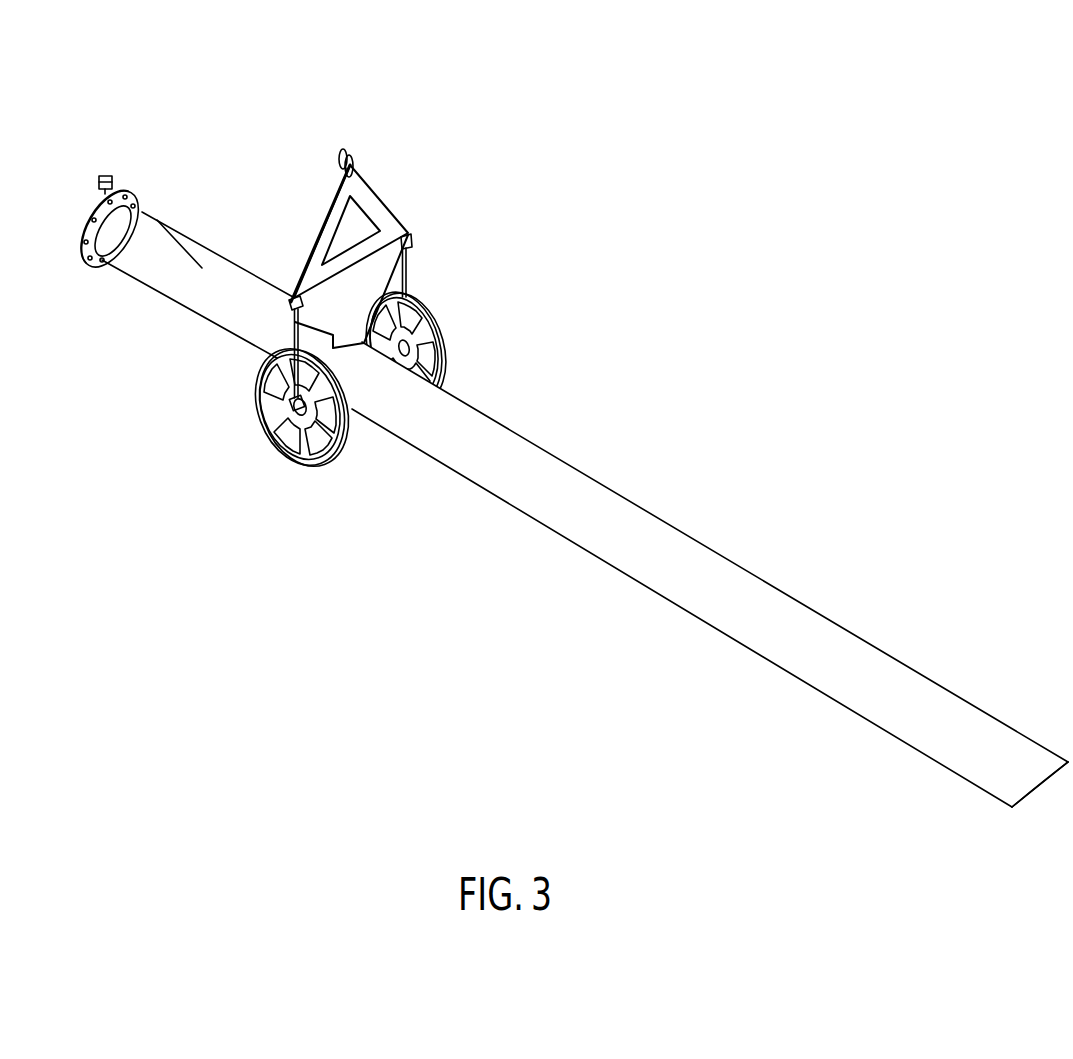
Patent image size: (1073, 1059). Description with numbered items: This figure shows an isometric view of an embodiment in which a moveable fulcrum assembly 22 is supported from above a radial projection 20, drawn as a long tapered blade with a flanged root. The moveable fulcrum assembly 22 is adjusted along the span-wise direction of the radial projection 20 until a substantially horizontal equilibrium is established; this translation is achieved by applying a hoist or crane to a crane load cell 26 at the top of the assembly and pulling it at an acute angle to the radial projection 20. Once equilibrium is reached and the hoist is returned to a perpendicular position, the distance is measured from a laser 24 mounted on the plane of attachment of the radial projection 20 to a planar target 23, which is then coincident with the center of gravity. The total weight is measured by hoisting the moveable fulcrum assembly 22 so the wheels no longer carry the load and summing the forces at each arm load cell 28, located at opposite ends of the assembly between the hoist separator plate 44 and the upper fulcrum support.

The radial projection 20 is at (832, 648).
The moveable fulcrum assembly 22 is at (458, 346).
The planar target 23 is at (342, 298).
The laser 24 is at (110, 170).
The crane load cell 26 is at (348, 148).
The arm load cell 28 is at (293, 333).
The hoist separator plate 44 is at (378, 213).